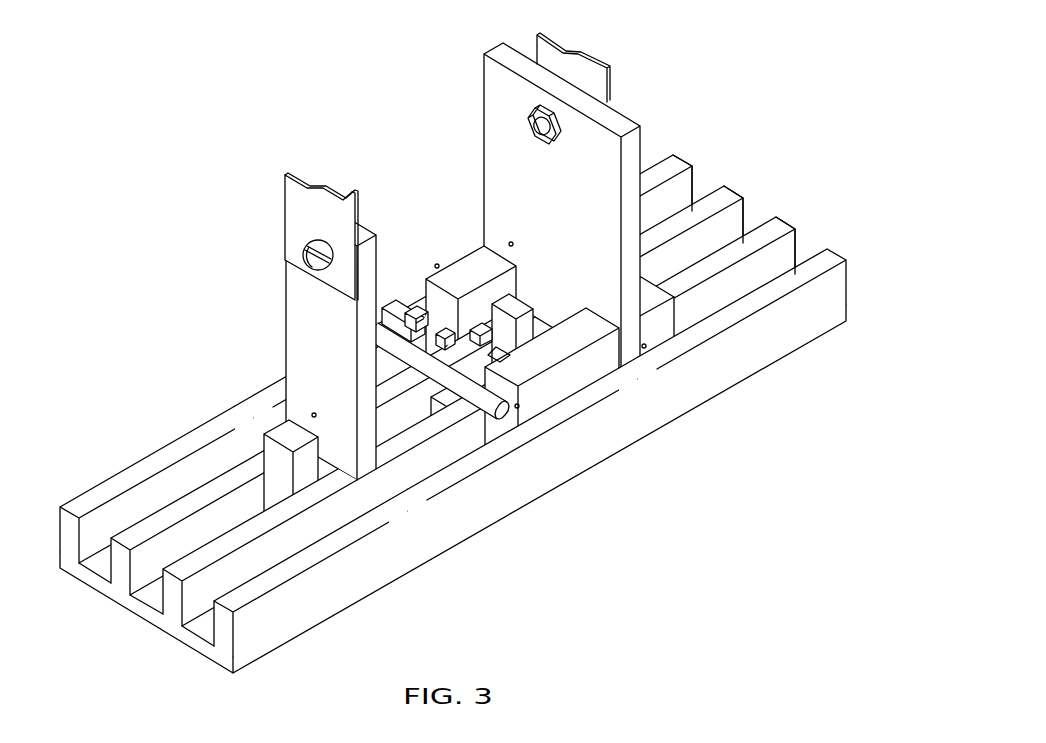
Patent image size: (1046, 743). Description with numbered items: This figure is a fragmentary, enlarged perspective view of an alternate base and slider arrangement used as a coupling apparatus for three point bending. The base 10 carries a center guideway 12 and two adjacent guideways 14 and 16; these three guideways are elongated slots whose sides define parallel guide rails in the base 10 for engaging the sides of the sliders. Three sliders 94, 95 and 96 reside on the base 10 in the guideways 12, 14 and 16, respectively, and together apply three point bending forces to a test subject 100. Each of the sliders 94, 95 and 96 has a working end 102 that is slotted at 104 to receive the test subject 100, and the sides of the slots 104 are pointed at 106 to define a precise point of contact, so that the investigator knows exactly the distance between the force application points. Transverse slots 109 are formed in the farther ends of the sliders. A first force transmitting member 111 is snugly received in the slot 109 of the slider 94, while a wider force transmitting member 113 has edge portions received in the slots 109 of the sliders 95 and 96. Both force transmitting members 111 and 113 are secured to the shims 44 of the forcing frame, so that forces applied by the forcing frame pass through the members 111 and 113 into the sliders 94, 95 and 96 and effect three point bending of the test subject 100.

The base 10 is at (453, 353).
The center guideway 12 is at (742, 233).
The adjacent guideway 14 is at (690, 196).
The adjacent guideway 16 is at (797, 258).
The shim 44 is at (283, 198).
The slider 94 is at (275, 445).
The slider 95 is at (478, 288).
The slider 96 is at (590, 383).
The test subject 100 is at (508, 428).
The working end 102 is at (507, 318).
The slot 104 is at (386, 300).
The pointed side 106 is at (440, 335).
The transverse slot 109 is at (312, 414).
The first force transmitting member 111 is at (336, 345).
The wider force transmitting member 113 is at (568, 195).